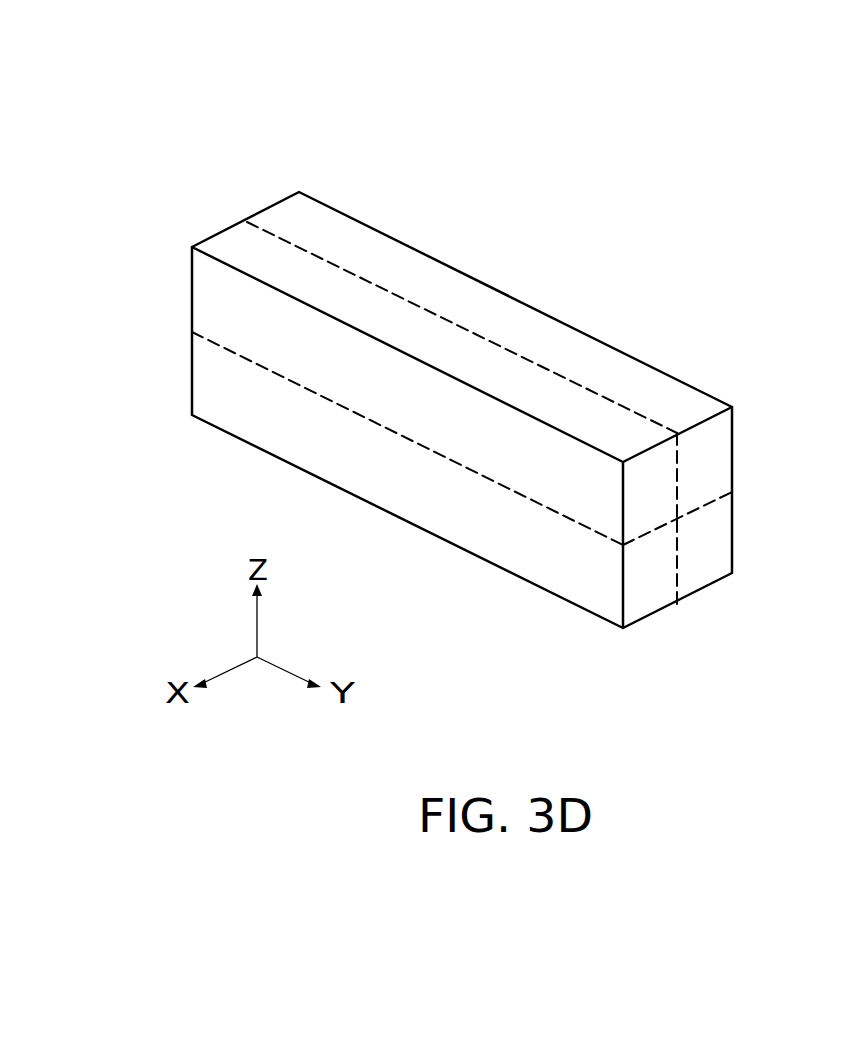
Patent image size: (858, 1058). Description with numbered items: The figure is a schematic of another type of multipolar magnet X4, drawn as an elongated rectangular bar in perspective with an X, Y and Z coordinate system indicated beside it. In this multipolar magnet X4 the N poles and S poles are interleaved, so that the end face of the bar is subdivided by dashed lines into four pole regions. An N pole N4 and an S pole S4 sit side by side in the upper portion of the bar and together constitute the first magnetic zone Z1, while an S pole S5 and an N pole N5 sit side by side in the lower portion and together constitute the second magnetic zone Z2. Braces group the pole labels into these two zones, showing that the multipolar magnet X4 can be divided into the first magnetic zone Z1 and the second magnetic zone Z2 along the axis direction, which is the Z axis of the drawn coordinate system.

The multipolar magnet X4 is at (216, 123).
The first magnetic zone Z1 is at (747, 247).
The second magnetic zone Z2 is at (715, 600).
The N pole N4 is at (652, 480).
The S pole S4 is at (700, 458).
The S pole S5 is at (653, 590).
The N pole N5 is at (707, 565).